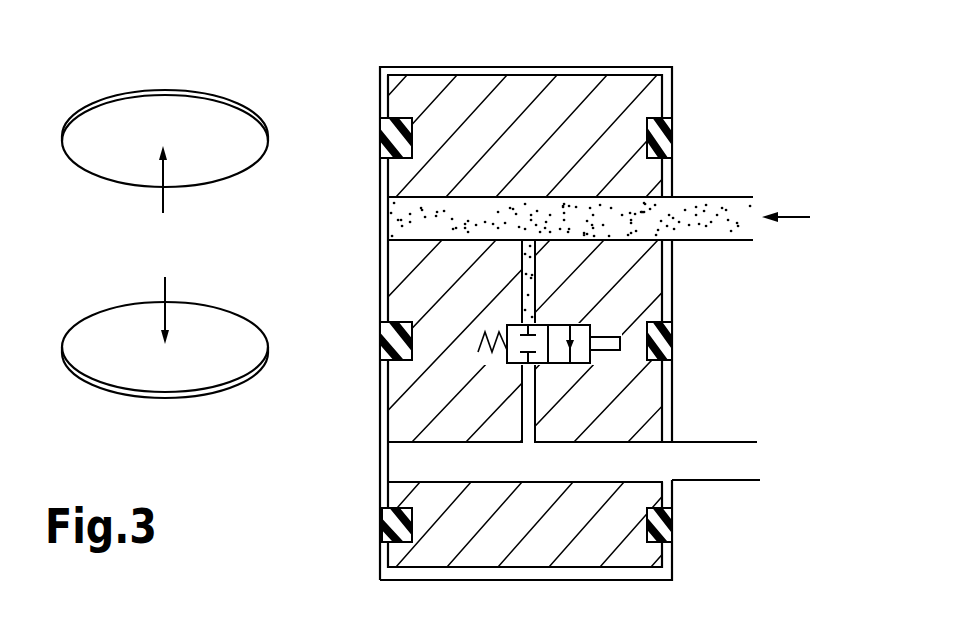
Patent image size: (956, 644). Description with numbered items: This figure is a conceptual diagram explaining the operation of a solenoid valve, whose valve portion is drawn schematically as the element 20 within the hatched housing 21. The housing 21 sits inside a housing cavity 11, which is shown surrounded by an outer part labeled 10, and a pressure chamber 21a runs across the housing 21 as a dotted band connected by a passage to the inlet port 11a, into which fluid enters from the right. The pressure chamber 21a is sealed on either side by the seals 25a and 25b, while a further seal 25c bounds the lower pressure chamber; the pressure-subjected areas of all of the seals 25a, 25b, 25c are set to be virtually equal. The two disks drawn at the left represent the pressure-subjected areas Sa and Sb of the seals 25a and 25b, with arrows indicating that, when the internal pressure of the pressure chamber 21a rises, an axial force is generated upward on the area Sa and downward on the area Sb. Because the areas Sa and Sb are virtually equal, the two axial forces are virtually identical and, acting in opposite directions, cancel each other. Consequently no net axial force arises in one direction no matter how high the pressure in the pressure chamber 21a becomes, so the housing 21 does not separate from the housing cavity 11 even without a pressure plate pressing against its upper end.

The housing 10 is at (673, 100).
The housing cavity 11 is at (664, 396).
The inlet port 11a is at (718, 210).
The control valve 20 is at (592, 325).
The housing 21 is at (462, 87).
The pressure chamber 21a is at (403, 228).
The seal 25a is at (380, 140).
The seal 25b is at (380, 350).
The seal 25c is at (385, 527).
The pressure-subjected area Sa is at (232, 163).
The pressure-subjected area Sb is at (225, 330).